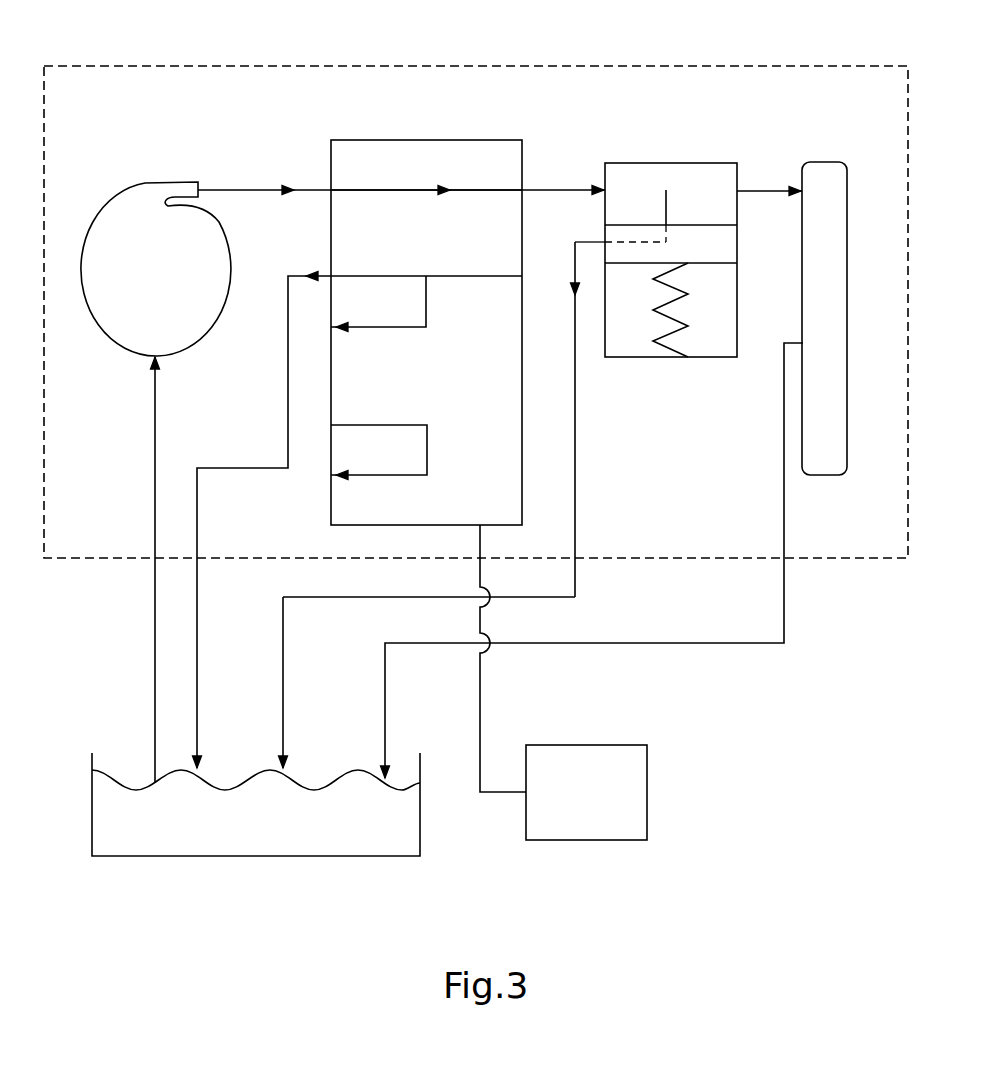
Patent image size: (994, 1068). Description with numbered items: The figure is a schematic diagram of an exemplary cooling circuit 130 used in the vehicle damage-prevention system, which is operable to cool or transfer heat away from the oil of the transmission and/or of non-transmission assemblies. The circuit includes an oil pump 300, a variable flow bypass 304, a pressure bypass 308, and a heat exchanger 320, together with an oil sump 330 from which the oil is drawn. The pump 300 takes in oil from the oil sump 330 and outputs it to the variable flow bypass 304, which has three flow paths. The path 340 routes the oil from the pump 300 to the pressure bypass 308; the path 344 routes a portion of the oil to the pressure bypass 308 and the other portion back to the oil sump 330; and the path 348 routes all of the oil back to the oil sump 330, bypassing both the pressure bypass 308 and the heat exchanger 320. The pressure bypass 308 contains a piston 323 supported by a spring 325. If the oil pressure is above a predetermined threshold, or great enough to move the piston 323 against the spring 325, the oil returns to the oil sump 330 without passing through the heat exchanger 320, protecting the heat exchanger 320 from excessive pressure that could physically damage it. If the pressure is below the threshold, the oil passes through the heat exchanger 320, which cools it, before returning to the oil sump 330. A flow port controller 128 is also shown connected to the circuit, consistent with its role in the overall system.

The cooling circuit 130 is at (530, 66).
The oil pump 300 is at (141, 182).
The variable flow bypass 304 is at (418, 140).
The path 340 is at (350, 190).
The path 344 is at (365, 276).
The path 348 is at (381, 425).
The pressure bypass 308 is at (645, 163).
The piston 323 is at (690, 225).
The spring 325 is at (683, 307).
The heat exchanger 320 is at (823, 162).
The flow port controller 128 is at (605, 745).
The oil sump 330 is at (235, 856).